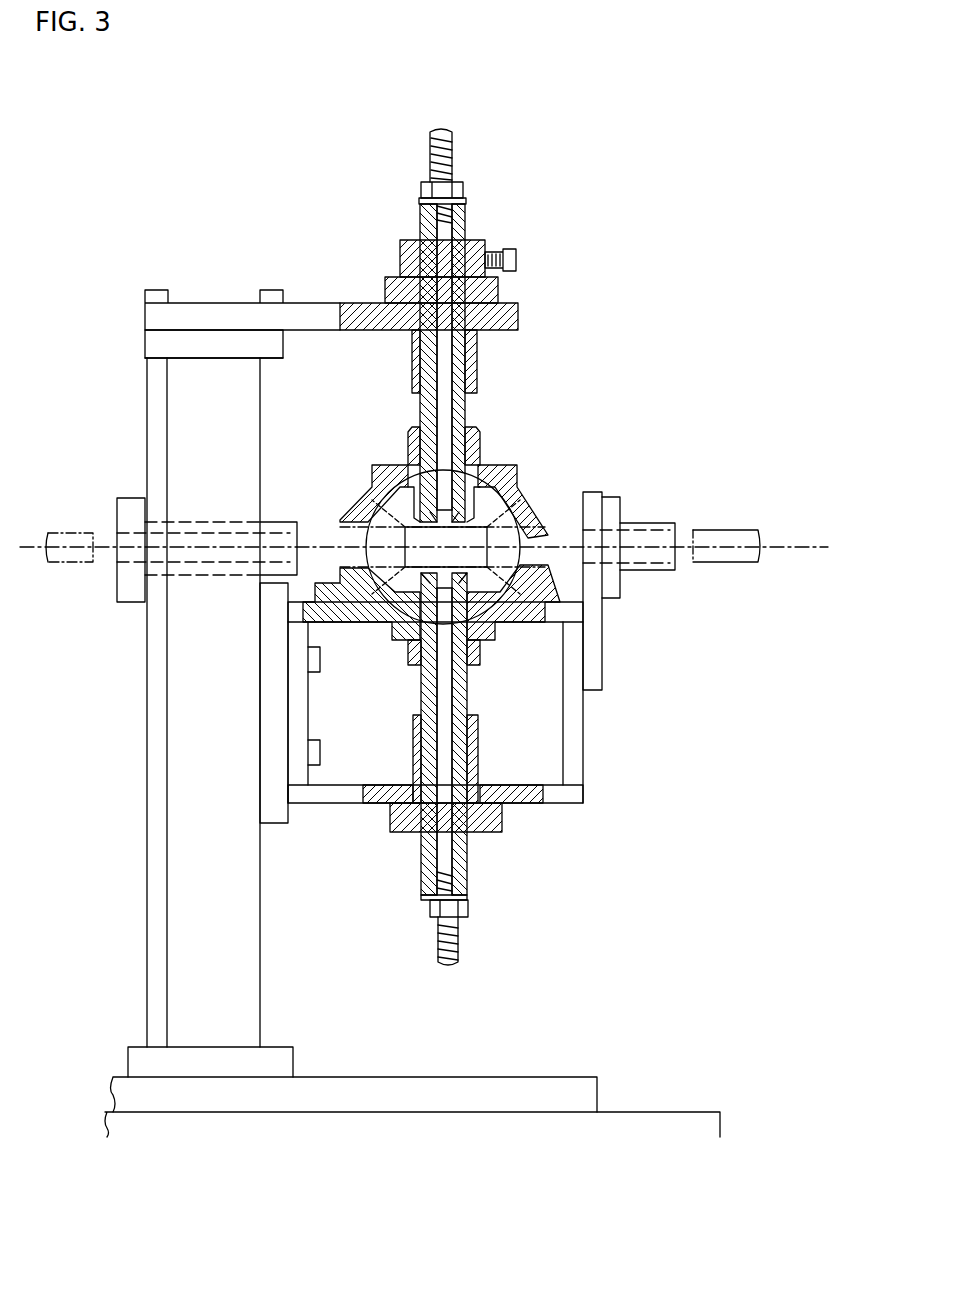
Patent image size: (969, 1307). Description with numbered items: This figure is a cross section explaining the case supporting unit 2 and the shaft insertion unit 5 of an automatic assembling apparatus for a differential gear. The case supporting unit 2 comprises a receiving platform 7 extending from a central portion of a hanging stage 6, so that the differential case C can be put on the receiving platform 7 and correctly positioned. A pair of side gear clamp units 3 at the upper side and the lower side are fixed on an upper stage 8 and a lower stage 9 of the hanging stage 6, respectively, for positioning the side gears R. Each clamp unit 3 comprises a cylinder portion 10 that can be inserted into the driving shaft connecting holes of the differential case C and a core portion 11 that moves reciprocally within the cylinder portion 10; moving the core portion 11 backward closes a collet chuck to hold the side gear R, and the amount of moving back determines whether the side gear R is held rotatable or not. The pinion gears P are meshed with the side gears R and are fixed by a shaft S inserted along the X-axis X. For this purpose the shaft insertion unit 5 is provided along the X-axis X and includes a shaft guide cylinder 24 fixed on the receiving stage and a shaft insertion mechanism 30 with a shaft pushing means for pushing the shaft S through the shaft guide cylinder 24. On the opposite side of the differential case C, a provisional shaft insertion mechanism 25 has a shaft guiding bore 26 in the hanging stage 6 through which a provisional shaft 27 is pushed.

The case supporting unit 2 is at (572, 207).
The side gear clamp unit 3 is at (474, 212).
The shaft insertion unit 5 is at (645, 511).
The hanging stage 6 is at (172, 742).
The receiving platform 7 is at (345, 625).
The upper stage 8 is at (345, 304).
The lower stage 9 is at (367, 786).
The cylinder portion 10 is at (478, 407).
The core portion 11 is at (437, 400).
The shaft guide cylinder 24 is at (650, 572).
The provisional shaft insertion mechanism 25 is at (111, 490).
The shaft guiding bore 26 is at (205, 535).
The provisional shaft 27 is at (75, 572).
The shaft insertion mechanism 30 is at (690, 524).
The differential case C is at (500, 445).
The side gear R is at (380, 520).
The pinion gear P is at (346, 541).
The shaft S is at (740, 533).
The X-axis X is at (436, 549).